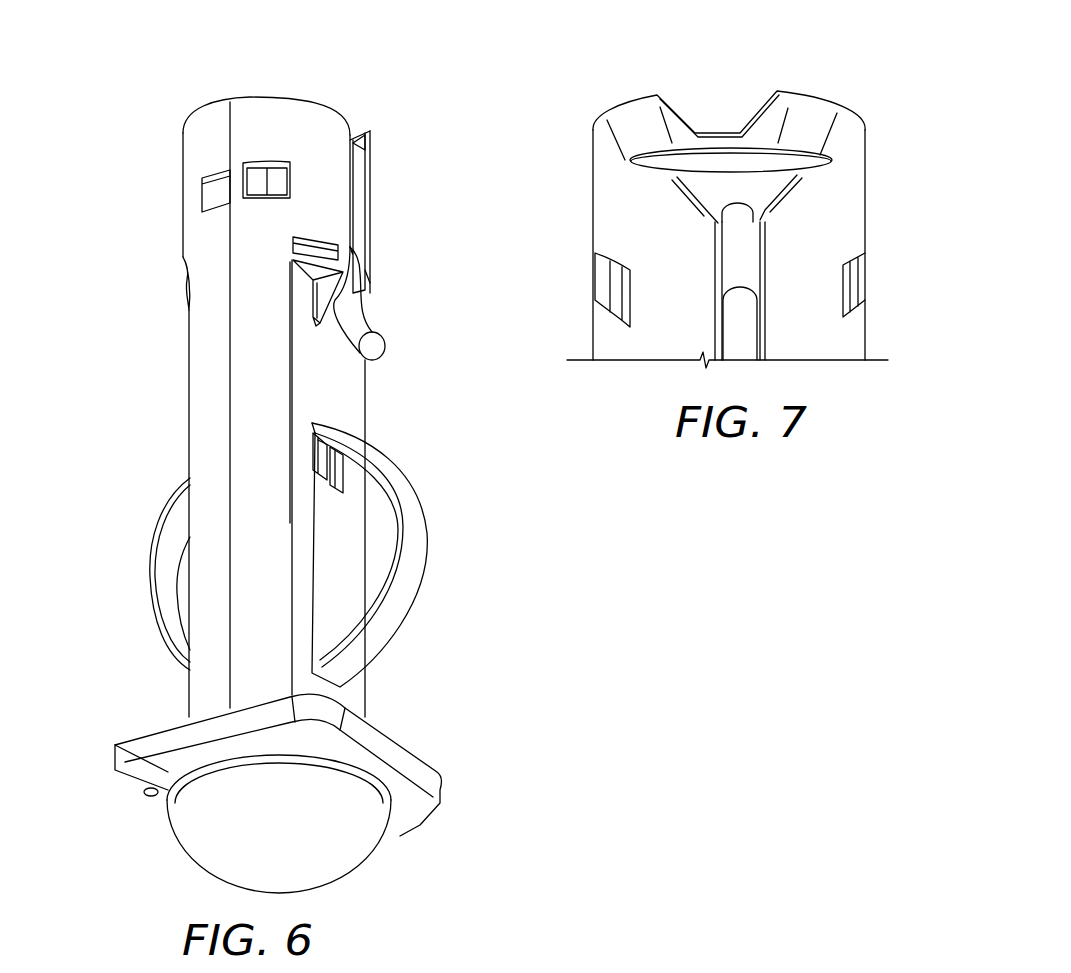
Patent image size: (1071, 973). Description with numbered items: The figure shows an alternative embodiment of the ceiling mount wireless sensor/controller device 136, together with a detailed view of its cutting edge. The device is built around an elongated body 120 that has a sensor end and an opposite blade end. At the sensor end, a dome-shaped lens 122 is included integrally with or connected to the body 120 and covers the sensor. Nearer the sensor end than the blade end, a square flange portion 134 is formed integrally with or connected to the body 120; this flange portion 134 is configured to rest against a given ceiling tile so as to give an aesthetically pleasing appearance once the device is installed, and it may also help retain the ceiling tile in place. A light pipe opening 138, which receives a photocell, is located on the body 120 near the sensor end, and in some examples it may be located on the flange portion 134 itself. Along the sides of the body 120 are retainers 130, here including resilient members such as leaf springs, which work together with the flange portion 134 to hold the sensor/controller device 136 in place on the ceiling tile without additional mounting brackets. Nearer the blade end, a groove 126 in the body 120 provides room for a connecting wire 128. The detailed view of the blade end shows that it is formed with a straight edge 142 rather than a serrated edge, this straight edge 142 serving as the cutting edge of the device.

In FIG. 6, the sensor/controller device 136 is at (127, 138).
In FIG. 6, the body 120 is at (205, 375).
In FIG. 7, the body 120 is at (727, 237).
In FIG. 6, the straight edge 142 is at (307, 97).
In FIG. 7, the straight edge 142 is at (782, 90).
In FIG. 6, the groove 126 is at (358, 178).
In FIG. 7, the groove 126 is at (735, 202).
In FIG. 6, the connecting wire 128 is at (373, 345).
In FIG. 7, the connecting wire 128 is at (740, 347).
In FIG. 6, the retainers 130 is at (155, 548).
In FIG. 6, the flange portion 134 is at (395, 755).
In FIG. 6, the light pipe opening 138 is at (150, 795).
In FIG. 6, the lens 122 is at (200, 855).